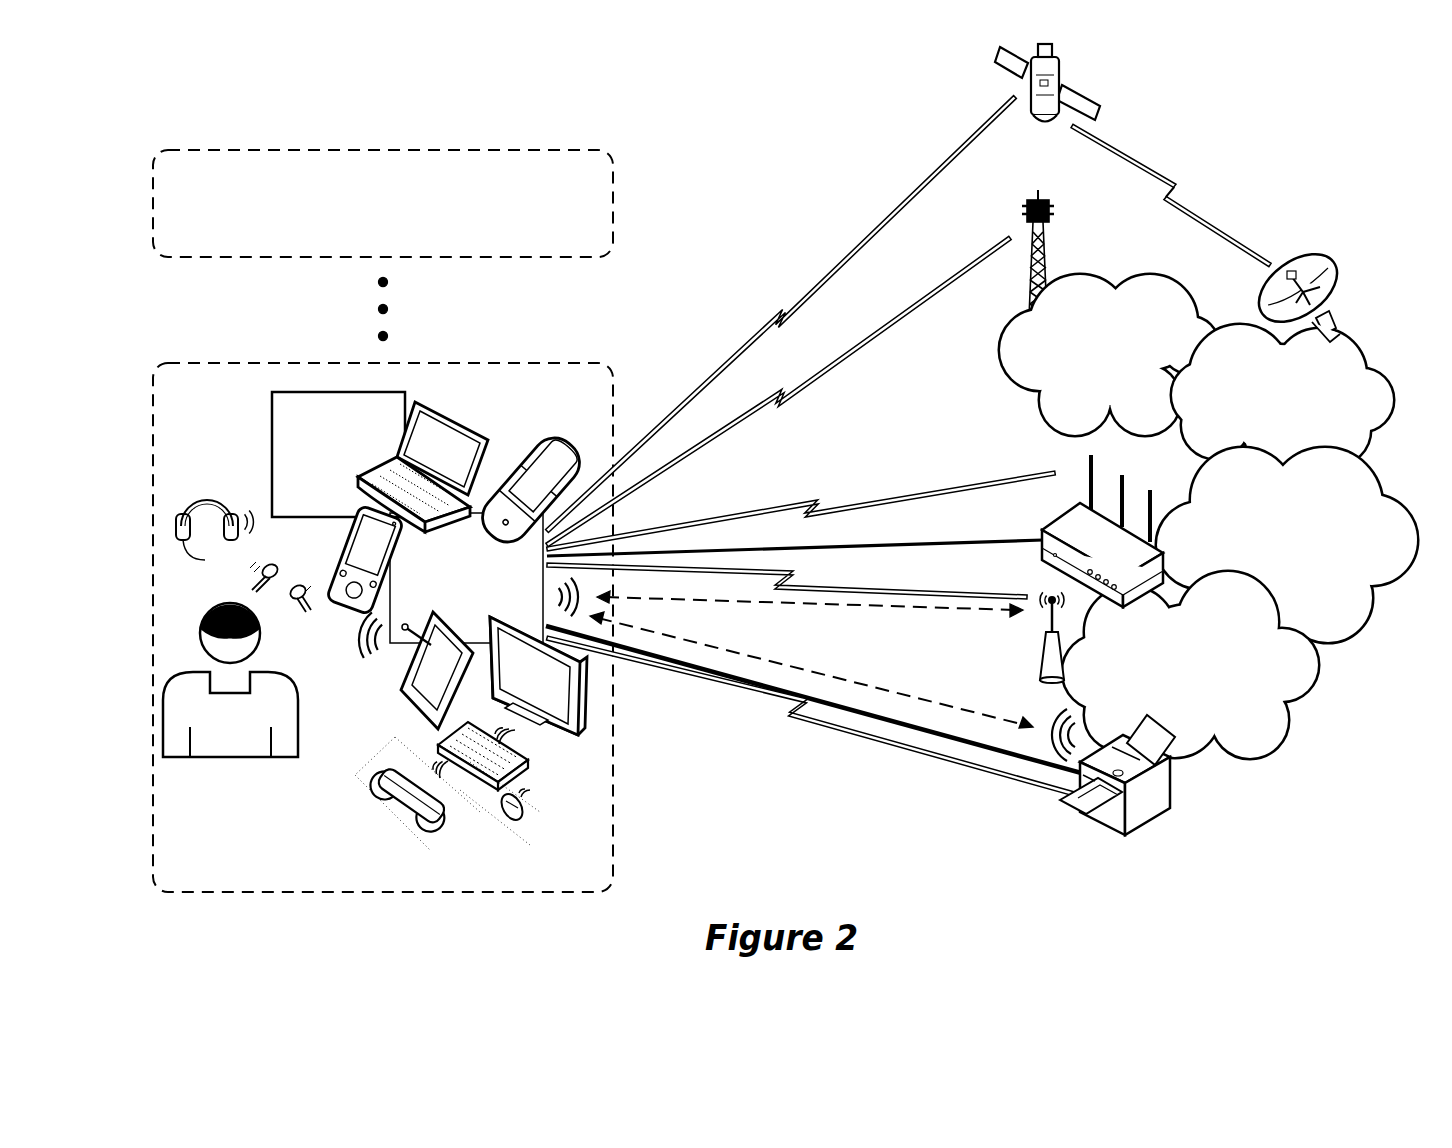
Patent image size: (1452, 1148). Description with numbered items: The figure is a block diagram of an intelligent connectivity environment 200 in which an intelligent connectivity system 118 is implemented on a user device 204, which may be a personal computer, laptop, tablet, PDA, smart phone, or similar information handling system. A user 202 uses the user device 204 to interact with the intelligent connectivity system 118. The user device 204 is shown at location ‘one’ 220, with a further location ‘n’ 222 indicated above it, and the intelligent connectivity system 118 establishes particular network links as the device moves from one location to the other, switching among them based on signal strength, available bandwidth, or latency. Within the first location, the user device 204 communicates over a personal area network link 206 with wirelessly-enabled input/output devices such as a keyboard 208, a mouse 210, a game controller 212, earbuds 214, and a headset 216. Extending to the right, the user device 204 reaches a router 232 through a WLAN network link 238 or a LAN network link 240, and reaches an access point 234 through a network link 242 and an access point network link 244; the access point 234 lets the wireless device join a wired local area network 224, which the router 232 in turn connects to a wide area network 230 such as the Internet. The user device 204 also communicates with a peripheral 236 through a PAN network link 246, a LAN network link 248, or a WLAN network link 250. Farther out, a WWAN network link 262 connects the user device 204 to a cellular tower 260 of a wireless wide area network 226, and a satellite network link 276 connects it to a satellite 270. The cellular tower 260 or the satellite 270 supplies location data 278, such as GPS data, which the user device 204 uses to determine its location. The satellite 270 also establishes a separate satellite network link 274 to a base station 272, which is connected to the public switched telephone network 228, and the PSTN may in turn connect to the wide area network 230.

The intelligent connectivity environment 200 is at (218, 112).
The user 202 is at (210, 760).
The user device 204 is at (451, 613).
The personal area network link 206 is at (352, 652).
The keyboard 208 is at (530, 762).
The mouse 210 is at (522, 820).
The game controller 212 is at (368, 780).
The earbuds 214 is at (272, 566).
The headset 216 is at (200, 478).
The intelligent connectivity system 118 is at (319, 496).
The location '1' 220 is at (455, 875).
The location 'n' 222 is at (455, 214).
The local area network 224 is at (1169, 696).
The wireless wide area network 226 is at (1095, 385).
The public switched telephone network 228 is at (1267, 438).
The wide area network 230 is at (1269, 575).
The router 232 is at (1058, 518).
The access point 234 is at (1040, 648).
The peripheral 236 is at (1178, 795).
The WLAN network link 238 is at (805, 501).
The LAN network link 240 is at (875, 546).
The network link 242 is at (843, 588).
The access point network link 244 is at (730, 607).
The PAN network link 246 is at (830, 673).
The LAN network link 248 is at (908, 731).
The WLAN network link 250 is at (868, 742).
The cellular tower 260 is at (1050, 220).
The WWAN network link 262 is at (852, 352).
The satellite 270 is at (1085, 80).
The base station 272 is at (1336, 268).
The satellite network link 274 is at (1198, 205).
The satellite network link 276 is at (700, 385).
The location data 278 is at (838, 272).